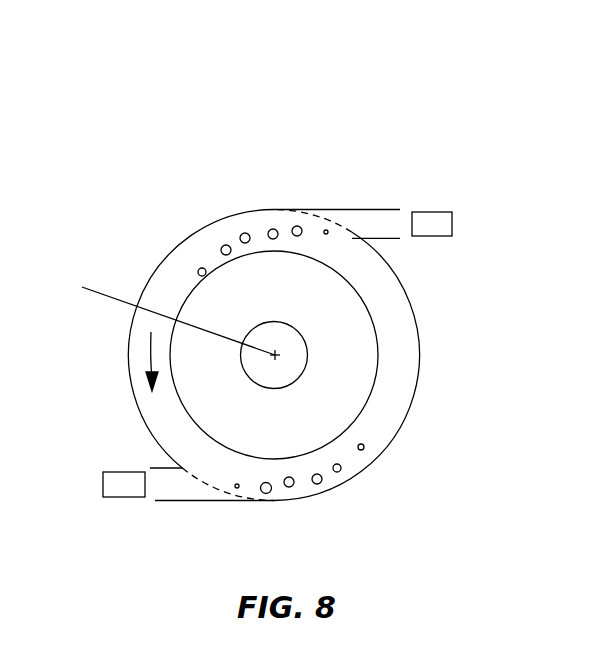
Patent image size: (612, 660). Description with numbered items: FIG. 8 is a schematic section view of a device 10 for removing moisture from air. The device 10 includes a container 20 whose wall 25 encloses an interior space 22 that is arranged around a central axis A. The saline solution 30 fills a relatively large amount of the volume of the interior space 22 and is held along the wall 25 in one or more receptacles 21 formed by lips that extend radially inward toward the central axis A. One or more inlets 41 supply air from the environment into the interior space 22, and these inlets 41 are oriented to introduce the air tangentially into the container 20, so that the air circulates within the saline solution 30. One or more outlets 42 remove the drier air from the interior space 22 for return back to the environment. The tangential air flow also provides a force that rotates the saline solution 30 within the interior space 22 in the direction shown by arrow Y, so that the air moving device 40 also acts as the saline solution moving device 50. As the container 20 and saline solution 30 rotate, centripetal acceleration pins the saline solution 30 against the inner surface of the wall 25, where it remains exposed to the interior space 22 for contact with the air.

The device 10 is at (285, 305).
The container 20 is at (317, 345).
The receptacle 21 is at (170, 283).
The interior space 22 is at (405, 337).
The wall 25 is at (197, 230).
The saline solution 30 is at (345, 313).
The air moving device 40 is at (285, 347).
The inlet 41 is at (365, 208).
The outlet 42 is at (285, 345).
The saline solution moving device 50 is at (437, 217).
The central axis A is at (173, 320).
The arrow Y is at (145, 355).